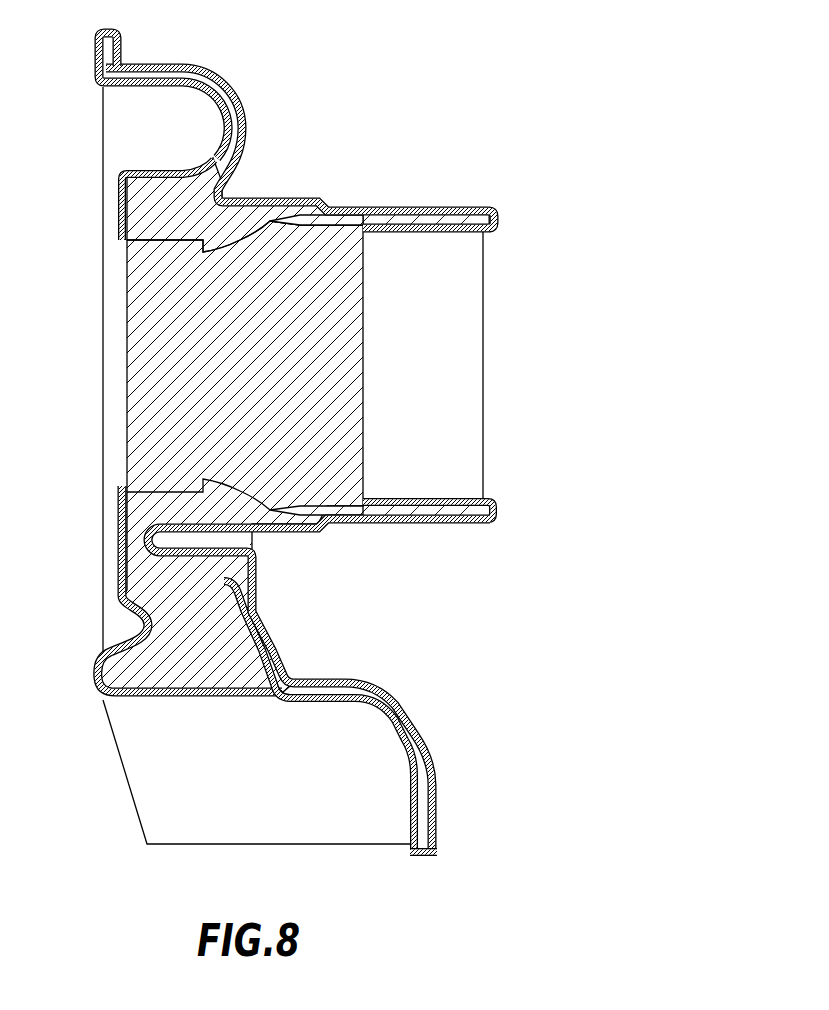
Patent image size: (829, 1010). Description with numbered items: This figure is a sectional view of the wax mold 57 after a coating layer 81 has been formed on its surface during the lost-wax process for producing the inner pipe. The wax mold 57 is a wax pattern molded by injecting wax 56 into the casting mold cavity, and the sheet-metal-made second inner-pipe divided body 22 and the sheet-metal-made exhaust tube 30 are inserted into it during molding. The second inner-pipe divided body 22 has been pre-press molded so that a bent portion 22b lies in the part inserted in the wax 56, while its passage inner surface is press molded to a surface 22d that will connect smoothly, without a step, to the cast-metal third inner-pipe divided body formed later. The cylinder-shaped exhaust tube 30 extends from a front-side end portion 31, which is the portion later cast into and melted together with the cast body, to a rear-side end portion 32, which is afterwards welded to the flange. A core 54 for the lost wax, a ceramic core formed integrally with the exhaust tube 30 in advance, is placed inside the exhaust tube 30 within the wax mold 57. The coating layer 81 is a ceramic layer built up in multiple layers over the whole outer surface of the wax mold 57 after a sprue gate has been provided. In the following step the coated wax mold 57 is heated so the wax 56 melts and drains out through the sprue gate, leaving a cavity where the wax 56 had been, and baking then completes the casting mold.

The second inner-pipe divided body 22 is at (212, 81).
The bent portion 22b is at (244, 147).
The surface 22d is at (193, 122).
The exhaust tube 30 is at (428, 524).
The front-side end portion 31 is at (293, 528).
The rear-side end portion 32 is at (458, 524).
The core for the lost wax 54 is at (147, 360).
The wax 56 is at (150, 210).
The wax mold 57 is at (387, 121).
The coating layer 81 is at (495, 209).